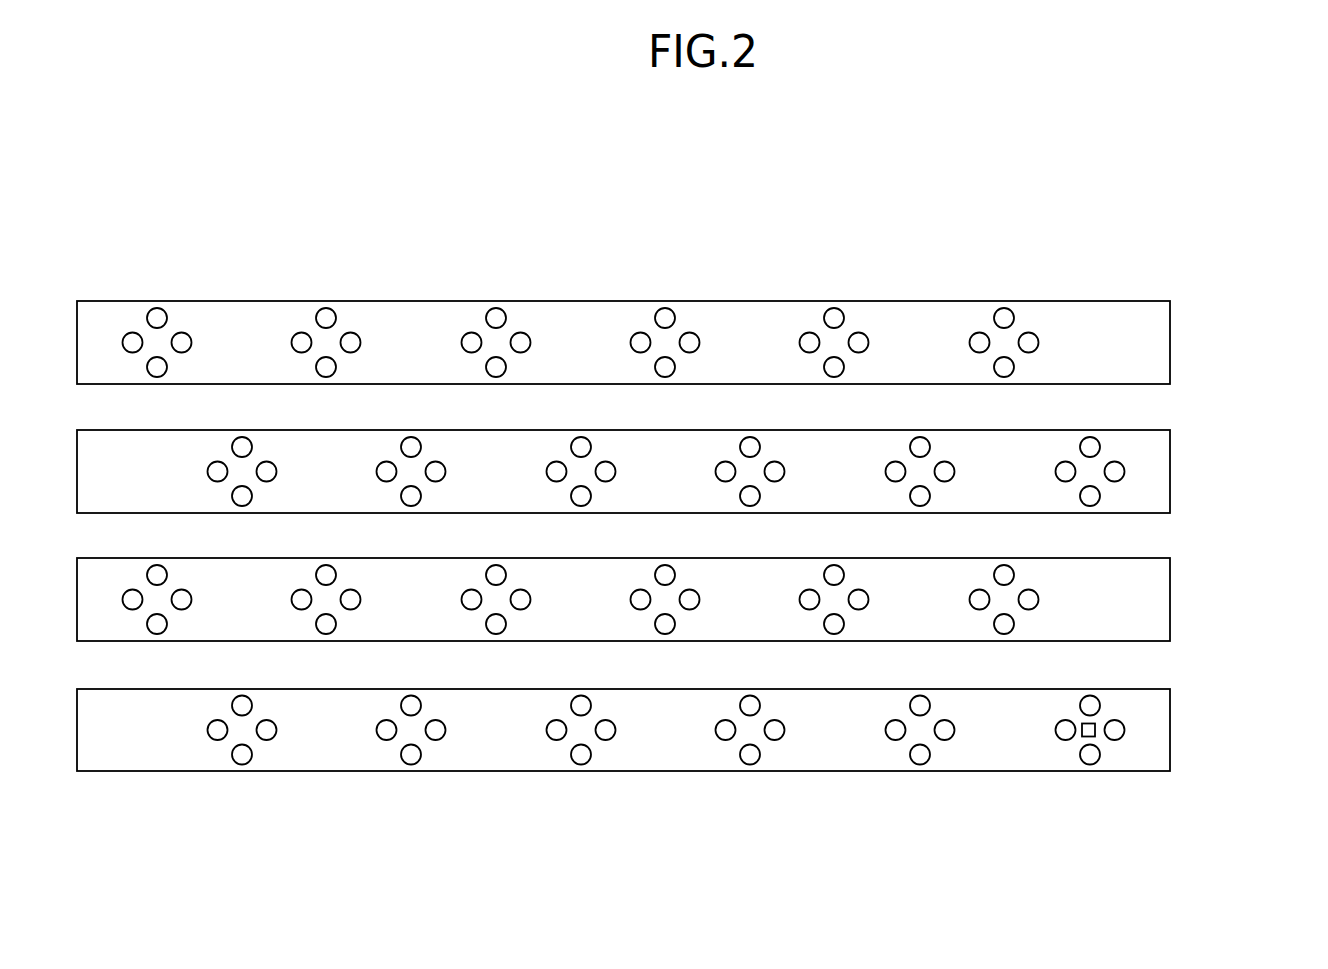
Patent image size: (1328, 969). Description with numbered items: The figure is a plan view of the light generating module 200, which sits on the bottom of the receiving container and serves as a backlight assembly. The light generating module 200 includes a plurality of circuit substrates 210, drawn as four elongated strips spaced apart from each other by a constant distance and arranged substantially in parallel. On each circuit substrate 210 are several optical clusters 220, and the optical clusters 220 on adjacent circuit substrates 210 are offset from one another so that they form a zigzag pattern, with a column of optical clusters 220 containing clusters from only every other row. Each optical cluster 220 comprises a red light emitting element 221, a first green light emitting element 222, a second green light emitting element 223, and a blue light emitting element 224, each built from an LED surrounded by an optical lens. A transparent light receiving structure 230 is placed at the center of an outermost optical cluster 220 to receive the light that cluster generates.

The light generating module 200 is at (626, 176).
The circuit substrate 210 is at (973, 762).
The optical cluster 220 is at (1190, 722).
The red light emitting element 221 is at (1066, 729).
The first green light emitting element 222 is at (1091, 707).
The second green light emitting element 223 is at (1115, 730).
The blue light emitting element 224 is at (1091, 755).
The light receiving structure 230 is at (1083, 737).